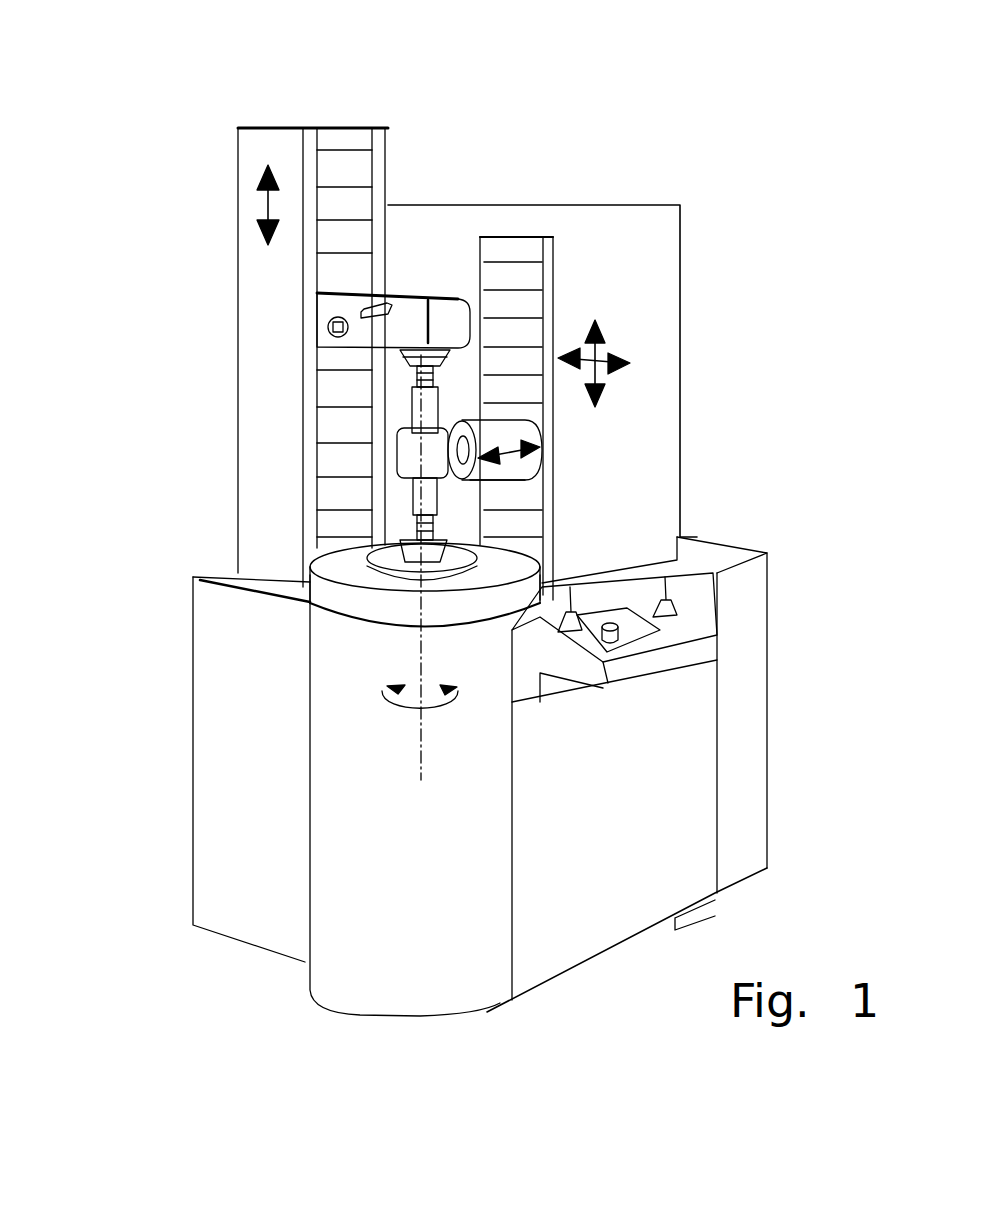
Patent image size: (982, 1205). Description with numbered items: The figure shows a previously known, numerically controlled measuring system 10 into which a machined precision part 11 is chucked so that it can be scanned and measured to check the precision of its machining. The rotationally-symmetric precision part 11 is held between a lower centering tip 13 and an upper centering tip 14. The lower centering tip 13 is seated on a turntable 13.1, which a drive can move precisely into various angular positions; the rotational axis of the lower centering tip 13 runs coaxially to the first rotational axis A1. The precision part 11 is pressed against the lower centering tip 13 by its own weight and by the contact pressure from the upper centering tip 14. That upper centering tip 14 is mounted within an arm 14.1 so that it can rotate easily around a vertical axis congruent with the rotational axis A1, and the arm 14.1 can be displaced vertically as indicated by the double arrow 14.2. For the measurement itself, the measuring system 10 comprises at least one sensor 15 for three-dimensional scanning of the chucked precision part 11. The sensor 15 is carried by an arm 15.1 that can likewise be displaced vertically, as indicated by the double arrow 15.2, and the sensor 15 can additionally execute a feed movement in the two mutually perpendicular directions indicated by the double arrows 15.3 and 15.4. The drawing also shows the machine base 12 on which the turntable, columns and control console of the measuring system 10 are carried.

The measuring system 10 is at (778, 122).
The precision part 11 is at (400, 452).
The machine base 12 is at (340, 832).
The lower centering tip 13 is at (345, 546).
The turntable 13.1 is at (347, 610).
The upper centering tip 14 is at (400, 368).
The arm 14.1 is at (330, 302).
The double arrow 14.2 is at (266, 199).
The sensor 15 is at (483, 447).
The arm 15.1 is at (515, 480).
The double arrow 15.2 is at (598, 324).
The double arrow 15.3 is at (540, 455).
The double arrow 15.4 is at (614, 364).
The first rotational axis A1 is at (420, 588).